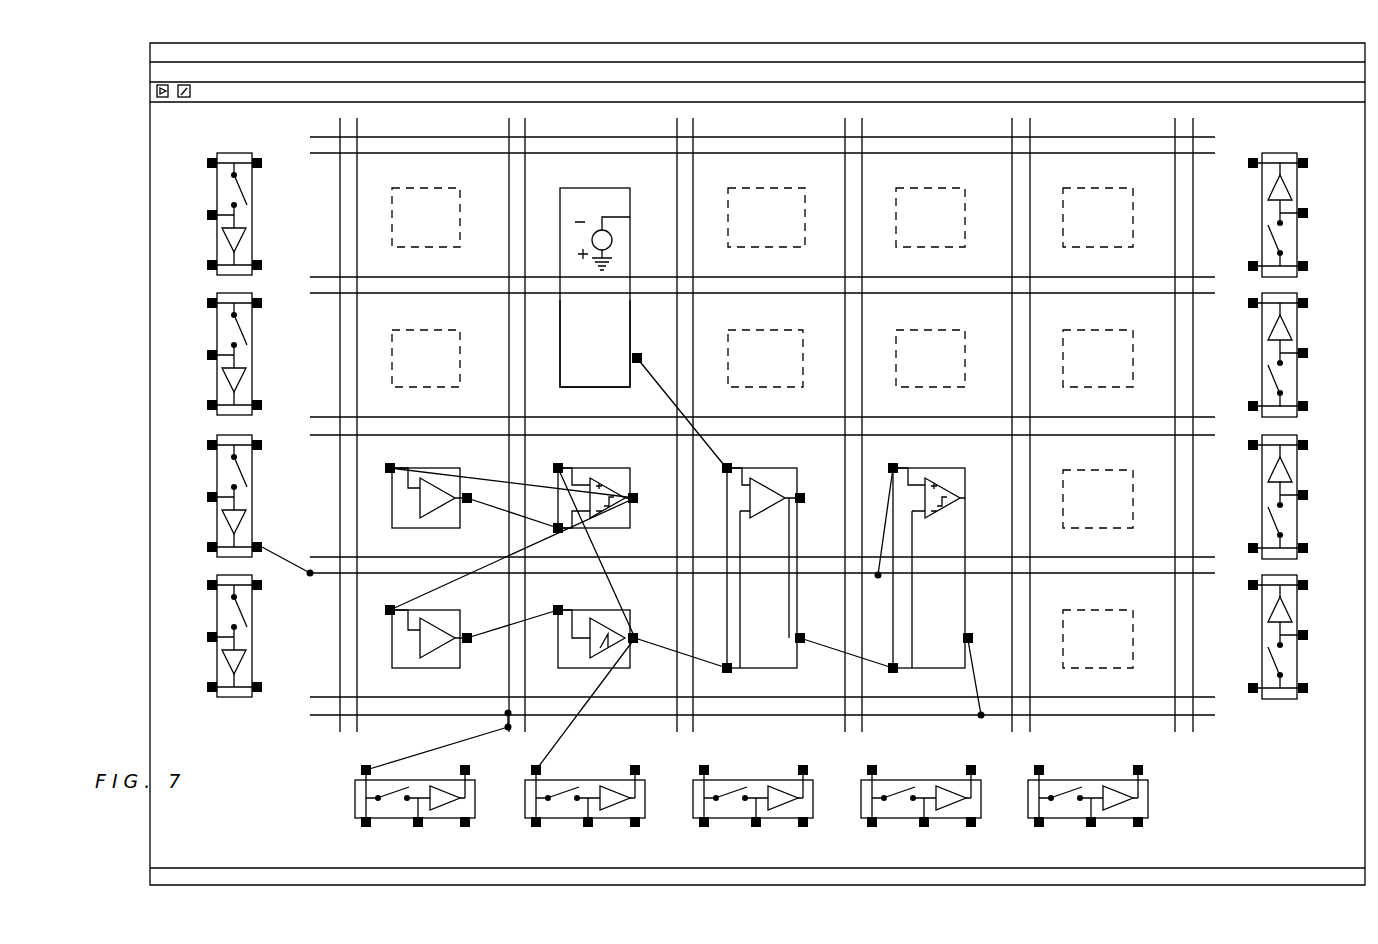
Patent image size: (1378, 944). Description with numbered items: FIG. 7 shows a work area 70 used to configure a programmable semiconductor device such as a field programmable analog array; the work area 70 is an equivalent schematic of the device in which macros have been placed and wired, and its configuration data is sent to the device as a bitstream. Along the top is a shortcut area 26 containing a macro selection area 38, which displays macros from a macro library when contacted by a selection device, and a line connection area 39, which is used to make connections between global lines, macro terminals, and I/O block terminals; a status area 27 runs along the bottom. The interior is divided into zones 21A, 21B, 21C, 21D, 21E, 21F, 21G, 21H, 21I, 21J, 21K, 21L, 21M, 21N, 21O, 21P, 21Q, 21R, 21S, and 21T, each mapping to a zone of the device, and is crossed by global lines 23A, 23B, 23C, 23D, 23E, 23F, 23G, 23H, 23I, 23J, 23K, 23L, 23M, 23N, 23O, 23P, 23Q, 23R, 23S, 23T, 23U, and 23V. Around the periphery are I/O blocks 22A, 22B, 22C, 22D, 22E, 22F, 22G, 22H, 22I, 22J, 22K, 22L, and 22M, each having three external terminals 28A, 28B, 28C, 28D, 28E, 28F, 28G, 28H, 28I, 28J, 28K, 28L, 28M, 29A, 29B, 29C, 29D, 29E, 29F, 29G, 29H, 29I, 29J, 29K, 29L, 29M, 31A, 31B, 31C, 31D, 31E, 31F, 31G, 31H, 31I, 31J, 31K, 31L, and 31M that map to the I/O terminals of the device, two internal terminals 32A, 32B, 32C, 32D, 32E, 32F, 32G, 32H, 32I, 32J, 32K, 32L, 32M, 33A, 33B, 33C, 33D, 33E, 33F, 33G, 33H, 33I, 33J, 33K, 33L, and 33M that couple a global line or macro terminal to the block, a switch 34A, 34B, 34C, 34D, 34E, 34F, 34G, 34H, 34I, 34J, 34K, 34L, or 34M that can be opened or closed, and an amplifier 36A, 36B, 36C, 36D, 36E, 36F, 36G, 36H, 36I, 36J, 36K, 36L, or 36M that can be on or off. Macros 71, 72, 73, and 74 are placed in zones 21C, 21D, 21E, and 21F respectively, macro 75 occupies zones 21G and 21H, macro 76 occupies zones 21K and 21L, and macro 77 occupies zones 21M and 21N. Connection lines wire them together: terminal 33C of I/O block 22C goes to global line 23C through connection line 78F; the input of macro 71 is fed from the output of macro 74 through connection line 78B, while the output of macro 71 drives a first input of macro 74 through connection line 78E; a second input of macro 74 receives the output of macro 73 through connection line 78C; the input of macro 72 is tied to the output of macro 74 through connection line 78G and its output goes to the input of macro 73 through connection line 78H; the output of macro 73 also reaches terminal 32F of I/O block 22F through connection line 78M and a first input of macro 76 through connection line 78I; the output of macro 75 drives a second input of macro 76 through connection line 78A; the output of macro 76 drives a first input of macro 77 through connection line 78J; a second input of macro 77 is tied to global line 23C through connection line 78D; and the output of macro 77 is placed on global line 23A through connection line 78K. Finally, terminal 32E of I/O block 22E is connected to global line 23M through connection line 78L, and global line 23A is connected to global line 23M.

The shortcut area 26 is at (150, 84).
The status area 27 is at (150, 875).
The macro selection area 38 is at (162, 99).
The line connection area 39 is at (186, 98).
The work area 70 is at (132, 840).
The macro 71 is at (403, 528).
The macro 72 is at (392, 640).
The macro 73 is at (558, 660).
The macro 74 is at (640, 508).
The macro 75 is at (630, 237).
The macro 76 is at (797, 539).
The macro 77 is at (965, 541).
The zone 21A is at (471, 200).
The zone 21B is at (471, 340).
The zone 21C is at (378, 508).
The zone 21D is at (371, 624).
The zone 21E is at (641, 618).
The zone 21F is at (660, 505).
The zone 21G is at (646, 342).
The zone 21H is at (643, 226).
The zone 21I is at (710, 200).
The zone 21J is at (710, 340).
The zone 21K is at (825, 505).
The zone 21L is at (825, 657).
The zone 21M is at (992, 620).
The zone 21N is at (988, 505).
The zone 21O is at (877, 340).
The zone 21P is at (877, 200).
The zone 21Q is at (1045, 200).
The zone 21R is at (1045, 340).
The zone 21S is at (1045, 480).
The zone 21T is at (1045, 620).
The I/O block 22A is at (217, 197).
The I/O block 22B is at (217, 337).
The I/O block 22C is at (217, 479).
The I/O block 22D is at (217, 619).
The I/O block 22E is at (355, 800).
The I/O block 22F is at (563, 818).
The I/O block 22G is at (731, 818).
The I/O block 22H is at (899, 818).
The I/O block 22I is at (1066, 818).
The I/O block 22J is at (1297, 658).
The I/O block 22K is at (1297, 518).
The I/O block 22L is at (1297, 376).
The I/O block 22M is at (1297, 236).
The global line 23A is at (1162, 716).
The global line 23B is at (1150, 697).
The global line 23C is at (1152, 574).
The global line 23D is at (1150, 557).
The global line 23E is at (1152, 436).
The global line 23F is at (1153, 417).
The global line 23G is at (1150, 294).
The global line 23H is at (1153, 277).
The global line 23I is at (1150, 154).
The global line 23J is at (930, 137).
The global line 23K is at (339, 133).
The global line 23L is at (359, 126).
The global line 23M is at (508, 133).
The global line 23N is at (527, 126).
The global line 23O is at (676, 133).
The global line 23P is at (695, 126).
The global line 23Q is at (844, 133).
The global line 23R is at (864, 126).
The global line 23S is at (1011, 133).
The global line 23T is at (1032, 126).
The global line 23U is at (1174, 133).
The global line 23V is at (1195, 126).
The external terminal 28A is at (207, 163).
The external terminal 28B is at (207, 303).
The external terminal 28C is at (207, 445).
The external terminal 28D is at (207, 585).
The external terminal 28E is at (361, 822).
The external terminal 28F is at (531, 822).
The external terminal 28G is at (699, 822).
The external terminal 28H is at (867, 822).
The external terminal 28I is at (1034, 822).
The external terminal 28J is at (1308, 688).
The external terminal 28K is at (1308, 548).
The external terminal 28L is at (1308, 406).
The external terminal 28M is at (1308, 266).
The external terminal 29A is at (207, 215).
The external terminal 29B is at (207, 355).
The external terminal 29C is at (207, 497).
The external terminal 29D is at (207, 637).
The external terminal 29E is at (418, 828).
The external terminal 29F is at (588, 828).
The external terminal 29G is at (756, 828).
The external terminal 29H is at (924, 828).
The external terminal 29I is at (1091, 828).
The external terminal 29J is at (1308, 635).
The external terminal 29K is at (1308, 495).
The external terminal 29L is at (1308, 353).
The external terminal 29M is at (1308, 213).
The external terminal 31A is at (207, 265).
The external terminal 31B is at (207, 405).
The external terminal 31C is at (207, 547).
The external terminal 31D is at (207, 687).
The external terminal 31E is at (465, 828).
The external terminal 31F is at (635, 828).
The external terminal 31G is at (803, 828).
The external terminal 31H is at (971, 828).
The external terminal 31I is at (1138, 828).
The external terminal 31J is at (1308, 585).
The external terminal 31K is at (1308, 445).
The external terminal 31L is at (1308, 303).
The external terminal 31M is at (1308, 163).
The internal terminal 32A is at (262, 163).
The internal terminal 32B is at (262, 303).
The internal terminal 32C is at (262, 445).
The internal terminal 32D is at (262, 585).
The internal terminal 32E is at (361, 770).
The internal terminal 32F is at (531, 770).
The internal terminal 32G is at (699, 770).
The internal terminal 32H is at (867, 770).
The internal terminal 32I is at (1034, 770).
The internal terminal 32J is at (1248, 688).
The internal terminal 32K is at (1248, 548).
The internal terminal 32L is at (1248, 406).
The internal terminal 32M is at (1248, 266).
The internal terminal 33A is at (262, 265).
The internal terminal 33B is at (262, 405).
The internal terminal 33C is at (262, 547).
The internal terminal 33D is at (262, 687).
The internal terminal 33E is at (470, 766).
The internal terminal 33F is at (635, 766).
The internal terminal 33G is at (803, 766).
The internal terminal 33H is at (971, 766).
The internal terminal 33I is at (1143, 770).
The internal terminal 33J is at (1248, 585).
The internal terminal 33K is at (1248, 445).
The internal terminal 33L is at (1248, 303).
The internal terminal 33M is at (1253, 160).
The switch 34A is at (244, 183).
The switch 34B is at (244, 323).
The switch 34C is at (244, 465).
The switch 34D is at (244, 605).
The switch 34E is at (373, 784).
The switch 34F is at (561, 796).
The switch 34G is at (729, 796).
The switch 34H is at (897, 796).
The switch 34I is at (1064, 796).
The switch 34J is at (1270, 658).
The switch 34K is at (1270, 518).
The switch 34L is at (1270, 376).
The switch 34M is at (1270, 236).
The amplifier 36A is at (246, 241).
The amplifier 36B is at (246, 381).
The amplifier 36C is at (246, 523).
The amplifier 36D is at (246, 663).
The amplifier 36E is at (441, 786).
The amplifier 36F is at (609, 785).
The amplifier 36G is at (777, 785).
The amplifier 36H is at (945, 785).
The amplifier 36I is at (1112, 785).
The amplifier 36J is at (1268, 613).
The amplifier 36K is at (1268, 473).
The amplifier 36L is at (1268, 331).
The amplifier 36M is at (1268, 191).
The connection line 78A is at (657, 390).
The connection line 78B is at (490, 465).
The connection line 78C is at (584, 540).
The connection line 78D is at (891, 467).
The connection line 78E is at (487, 507).
The connection line 78F is at (280, 564).
The connection line 78G is at (449, 588).
The connection line 78H is at (492, 632).
The connection line 78I is at (642, 650).
The connection line 78J is at (822, 642).
The connection line 78K is at (975, 674).
The connection line 78L is at (432, 747).
The connection line 78M is at (566, 733).